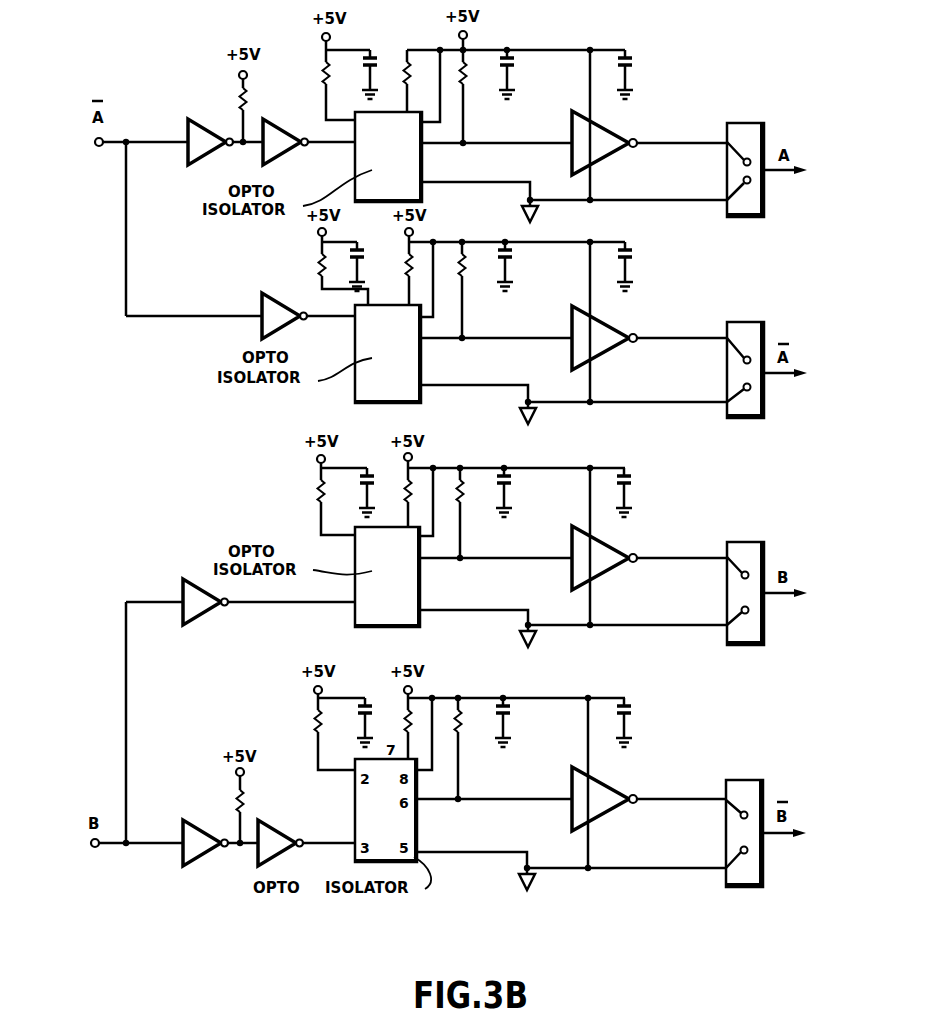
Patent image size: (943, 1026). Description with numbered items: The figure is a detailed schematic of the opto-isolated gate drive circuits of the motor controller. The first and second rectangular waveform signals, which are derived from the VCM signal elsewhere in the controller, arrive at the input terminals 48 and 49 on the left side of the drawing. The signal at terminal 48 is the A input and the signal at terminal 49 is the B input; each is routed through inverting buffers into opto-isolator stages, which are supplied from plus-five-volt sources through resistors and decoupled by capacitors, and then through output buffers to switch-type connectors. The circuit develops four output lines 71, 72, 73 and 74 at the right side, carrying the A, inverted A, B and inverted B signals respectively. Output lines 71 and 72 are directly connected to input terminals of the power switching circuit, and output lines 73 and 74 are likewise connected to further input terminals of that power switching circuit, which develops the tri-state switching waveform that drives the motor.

The terminal 48 is at (105, 147).
The terminal 49 is at (100, 848).
The output line 71 is at (782, 172).
The output line 72 is at (782, 375).
The output line 73 is at (782, 595).
The output line 74 is at (781, 835).